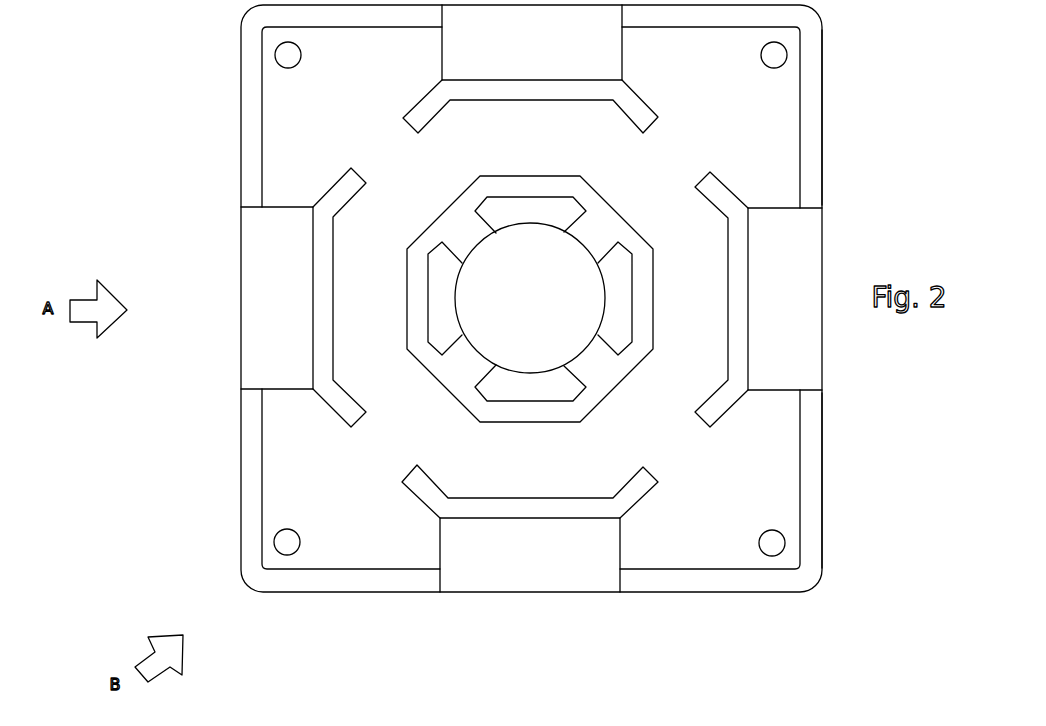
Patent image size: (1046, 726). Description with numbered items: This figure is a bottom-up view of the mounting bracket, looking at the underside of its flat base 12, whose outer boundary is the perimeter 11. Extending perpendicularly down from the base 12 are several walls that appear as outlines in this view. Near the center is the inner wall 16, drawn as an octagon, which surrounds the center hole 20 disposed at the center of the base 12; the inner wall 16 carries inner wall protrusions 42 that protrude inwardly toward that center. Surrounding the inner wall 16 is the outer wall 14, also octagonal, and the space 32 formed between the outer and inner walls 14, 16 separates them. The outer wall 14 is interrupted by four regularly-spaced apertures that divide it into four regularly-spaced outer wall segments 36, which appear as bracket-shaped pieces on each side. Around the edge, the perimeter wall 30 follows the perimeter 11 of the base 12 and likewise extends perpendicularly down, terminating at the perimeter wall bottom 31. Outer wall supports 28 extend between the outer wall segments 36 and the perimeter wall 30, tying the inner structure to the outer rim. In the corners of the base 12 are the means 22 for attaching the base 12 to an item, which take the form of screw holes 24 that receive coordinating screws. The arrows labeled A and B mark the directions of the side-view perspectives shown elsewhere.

The perimeter 11 is at (313, 585).
The flat base 12 is at (735, 101).
The outer wall 14 is at (470, 95).
The inner wall 16 is at (533, 183).
The center hole 20 is at (511, 328).
The means for attaching base to an item 22 is at (546, 342).
The screw holes 24 is at (773, 548).
The outer wall supports 28 is at (815, 245).
The perimeter wall 30 is at (815, 113).
The perimeter wall bottom 31 is at (818, 443).
The space 32 is at (383, 303).
The outer wall segments 36 is at (733, 293).
The inner wall protrusions 42 is at (590, 238).